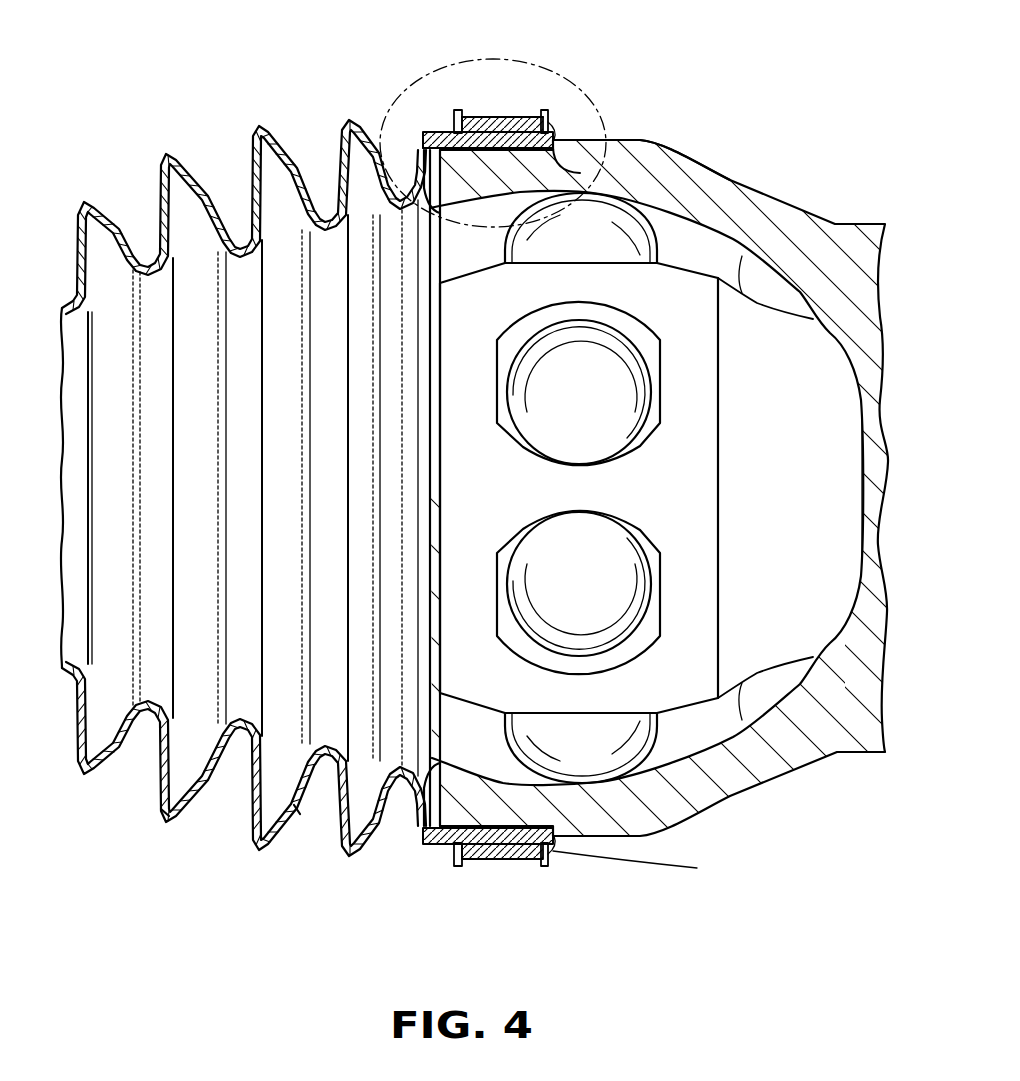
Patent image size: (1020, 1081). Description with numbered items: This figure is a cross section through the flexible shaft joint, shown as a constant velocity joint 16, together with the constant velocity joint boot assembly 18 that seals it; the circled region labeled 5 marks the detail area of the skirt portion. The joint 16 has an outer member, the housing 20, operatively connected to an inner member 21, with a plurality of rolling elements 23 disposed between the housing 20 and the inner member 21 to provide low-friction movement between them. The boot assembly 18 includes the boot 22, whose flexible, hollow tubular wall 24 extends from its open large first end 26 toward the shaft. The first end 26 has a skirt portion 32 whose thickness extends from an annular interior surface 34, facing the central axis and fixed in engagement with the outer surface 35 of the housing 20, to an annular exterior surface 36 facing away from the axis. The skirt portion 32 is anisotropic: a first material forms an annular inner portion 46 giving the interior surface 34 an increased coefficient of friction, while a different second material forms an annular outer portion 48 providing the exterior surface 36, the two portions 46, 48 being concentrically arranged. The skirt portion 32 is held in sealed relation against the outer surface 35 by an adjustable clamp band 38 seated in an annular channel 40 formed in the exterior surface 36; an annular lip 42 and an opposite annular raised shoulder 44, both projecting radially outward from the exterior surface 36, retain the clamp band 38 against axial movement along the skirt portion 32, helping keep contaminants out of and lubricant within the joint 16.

The detail region 5 is at (588, 100).
The constant velocity joint 16 is at (510, 540).
The constant velocity joint boot assembly 18 is at (343, 100).
The housing 20 is at (680, 150).
The inner member 21 is at (796, 505).
The boot 22 is at (172, 825).
The rolling elements 23 is at (625, 232).
The tubular wall 24 is at (297, 815).
The first end 26 is at (639, 865).
The skirt portion 32 is at (560, 881).
The interior surface 34 is at (580, 173).
The outer surface 35 is at (453, 122).
The exterior surface 36 is at (426, 108).
The clamp band 38 is at (503, 117).
The annular channel 40 is at (518, 117).
The annular lip 42 is at (553, 863).
The annular raised shoulder 44 is at (452, 864).
The annular inner portion 46 is at (468, 150).
The annular outer portion 48 is at (549, 133).